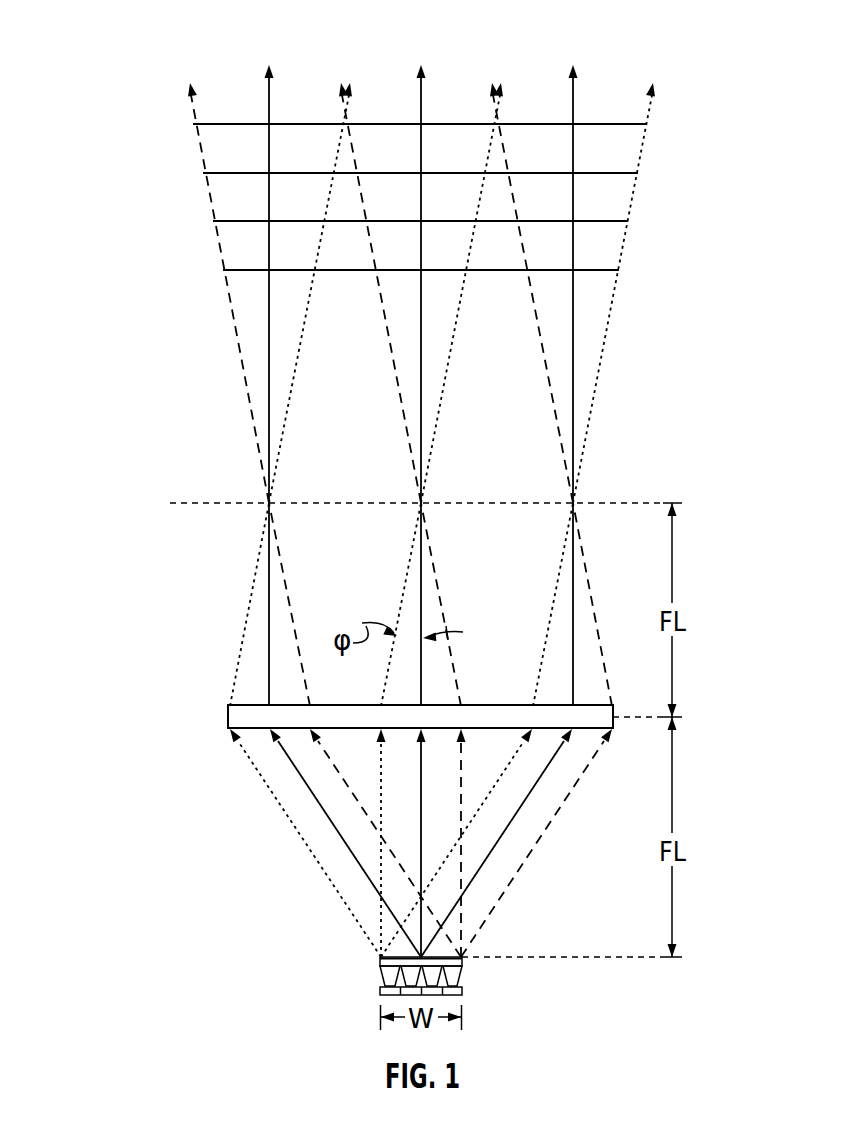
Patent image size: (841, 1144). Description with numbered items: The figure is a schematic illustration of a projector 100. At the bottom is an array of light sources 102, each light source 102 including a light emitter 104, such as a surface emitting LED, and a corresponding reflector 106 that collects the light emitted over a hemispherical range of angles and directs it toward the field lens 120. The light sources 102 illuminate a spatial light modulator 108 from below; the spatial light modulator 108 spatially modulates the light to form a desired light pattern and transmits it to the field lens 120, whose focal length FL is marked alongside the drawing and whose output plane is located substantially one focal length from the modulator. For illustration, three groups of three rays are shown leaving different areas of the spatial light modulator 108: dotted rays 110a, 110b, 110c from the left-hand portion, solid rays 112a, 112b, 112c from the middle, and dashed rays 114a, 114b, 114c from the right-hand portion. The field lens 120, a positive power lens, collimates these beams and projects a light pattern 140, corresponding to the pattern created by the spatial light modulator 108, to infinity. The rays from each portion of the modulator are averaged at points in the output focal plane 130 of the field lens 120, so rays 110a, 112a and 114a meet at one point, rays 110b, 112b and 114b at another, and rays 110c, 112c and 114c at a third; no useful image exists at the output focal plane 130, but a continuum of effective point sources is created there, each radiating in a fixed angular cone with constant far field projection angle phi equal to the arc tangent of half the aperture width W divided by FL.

The projector 100 is at (151, 37).
The light source 102 is at (418, 983).
The light emitter 104 is at (462, 993).
The reflector 106 is at (462, 975).
The spatial light modulator 108 is at (380, 959).
The dotted light ray 110a is at (262, 780).
The dotted light ray 110b is at (380, 783).
The dotted light ray 110c is at (487, 800).
The solid light ray 112a is at (268, 581).
The solid light ray 112b is at (420, 564).
The solid light ray 112c is at (572, 565).
The dashed light ray 114a is at (246, 388).
The dashed light ray 114b is at (398, 388).
The dashed light ray 114c is at (549, 388).
The field lens 120 is at (228, 717).
The output focal plane 130 is at (392, 503).
The light pattern 140 is at (232, 124).